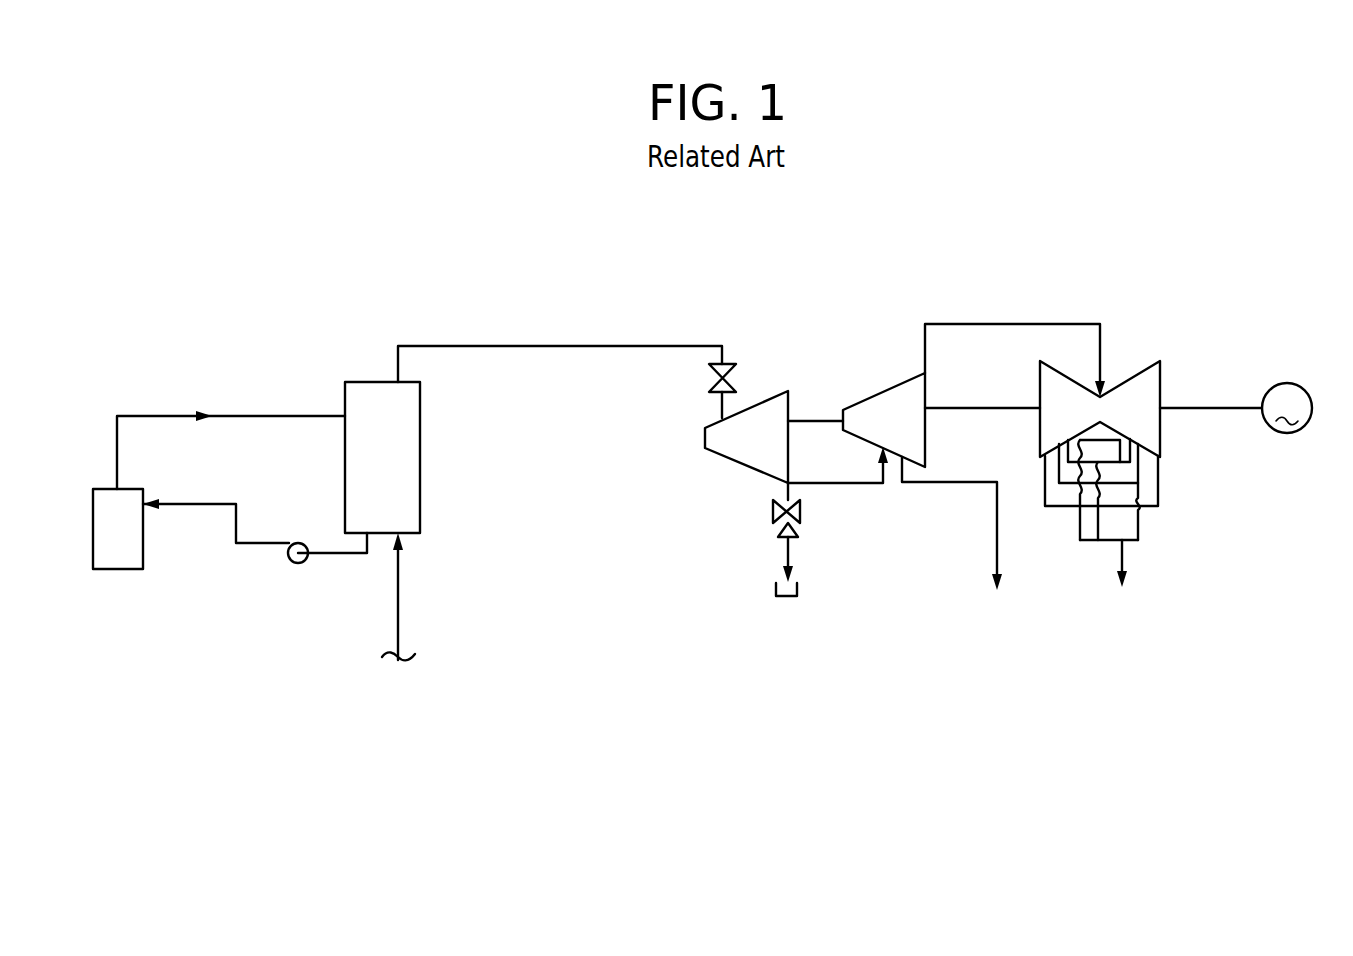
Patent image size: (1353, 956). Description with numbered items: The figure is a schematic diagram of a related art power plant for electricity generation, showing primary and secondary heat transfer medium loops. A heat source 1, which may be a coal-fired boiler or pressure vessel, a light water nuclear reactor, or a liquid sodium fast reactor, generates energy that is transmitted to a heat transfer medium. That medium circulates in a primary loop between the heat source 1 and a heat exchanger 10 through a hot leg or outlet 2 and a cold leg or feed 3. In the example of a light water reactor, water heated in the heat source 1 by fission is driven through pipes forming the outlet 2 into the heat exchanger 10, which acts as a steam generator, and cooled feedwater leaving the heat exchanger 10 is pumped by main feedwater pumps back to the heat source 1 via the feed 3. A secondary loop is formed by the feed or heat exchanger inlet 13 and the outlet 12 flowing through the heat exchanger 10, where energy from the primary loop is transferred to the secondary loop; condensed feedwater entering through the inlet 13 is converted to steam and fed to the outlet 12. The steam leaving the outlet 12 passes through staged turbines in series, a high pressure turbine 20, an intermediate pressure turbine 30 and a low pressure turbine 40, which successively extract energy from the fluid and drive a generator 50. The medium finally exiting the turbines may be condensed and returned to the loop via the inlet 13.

The heat source 1 is at (130, 569).
The hot leg or outlet 2 is at (250, 416).
The cold leg or feed 3 is at (256, 545).
The heat exchanger 10 is at (420, 481).
The outlet 12 is at (616, 345).
The feed or heat exchanger inlet 13 is at (398, 619).
The high pressure turbine 20 is at (762, 414).
The intermediate pressure turbine 30 is at (910, 433).
The low pressure turbine 40 is at (1145, 363).
The generator 50 is at (1283, 383).